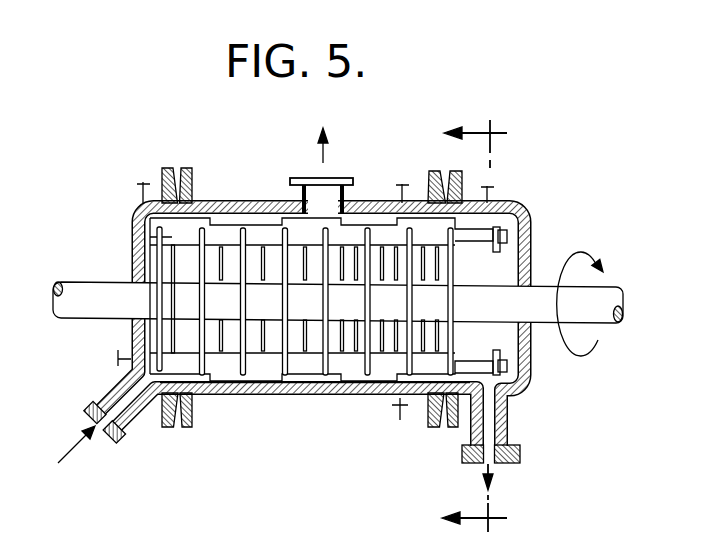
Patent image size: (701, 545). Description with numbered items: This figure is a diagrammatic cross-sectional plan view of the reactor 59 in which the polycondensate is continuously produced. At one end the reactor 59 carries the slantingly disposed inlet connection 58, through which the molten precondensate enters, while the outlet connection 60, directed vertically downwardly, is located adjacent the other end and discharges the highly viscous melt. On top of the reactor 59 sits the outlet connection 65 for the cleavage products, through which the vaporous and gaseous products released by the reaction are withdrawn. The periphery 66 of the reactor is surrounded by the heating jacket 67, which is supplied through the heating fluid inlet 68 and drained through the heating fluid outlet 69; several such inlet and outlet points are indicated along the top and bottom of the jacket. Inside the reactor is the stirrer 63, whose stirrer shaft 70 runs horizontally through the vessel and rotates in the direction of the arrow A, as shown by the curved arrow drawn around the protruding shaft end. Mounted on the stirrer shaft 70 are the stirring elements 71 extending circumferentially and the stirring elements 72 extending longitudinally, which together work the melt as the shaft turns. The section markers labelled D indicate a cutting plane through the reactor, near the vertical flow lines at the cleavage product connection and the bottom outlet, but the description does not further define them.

The inlet connection 58 is at (113, 389).
The reactor 59 is at (258, 384).
The outlet connection 60 is at (520, 455).
The stirrer 63 is at (96, 288).
The outlet connection for cleavage products 65 is at (310, 193).
The periphery 66 is at (345, 392).
The heating jacket 67 is at (307, 390).
The heating fluid inlet 68 is at (143, 182).
The heating fluid outlet 69 is at (118, 358).
The stirrer shaft 70 is at (250, 363).
The circumferentially extending stirring element 71 is at (222, 252).
The longitudinally extending stirring element 72 is at (222, 358).
The arrow A is at (597, 344).
The section line D is at (474, 322).